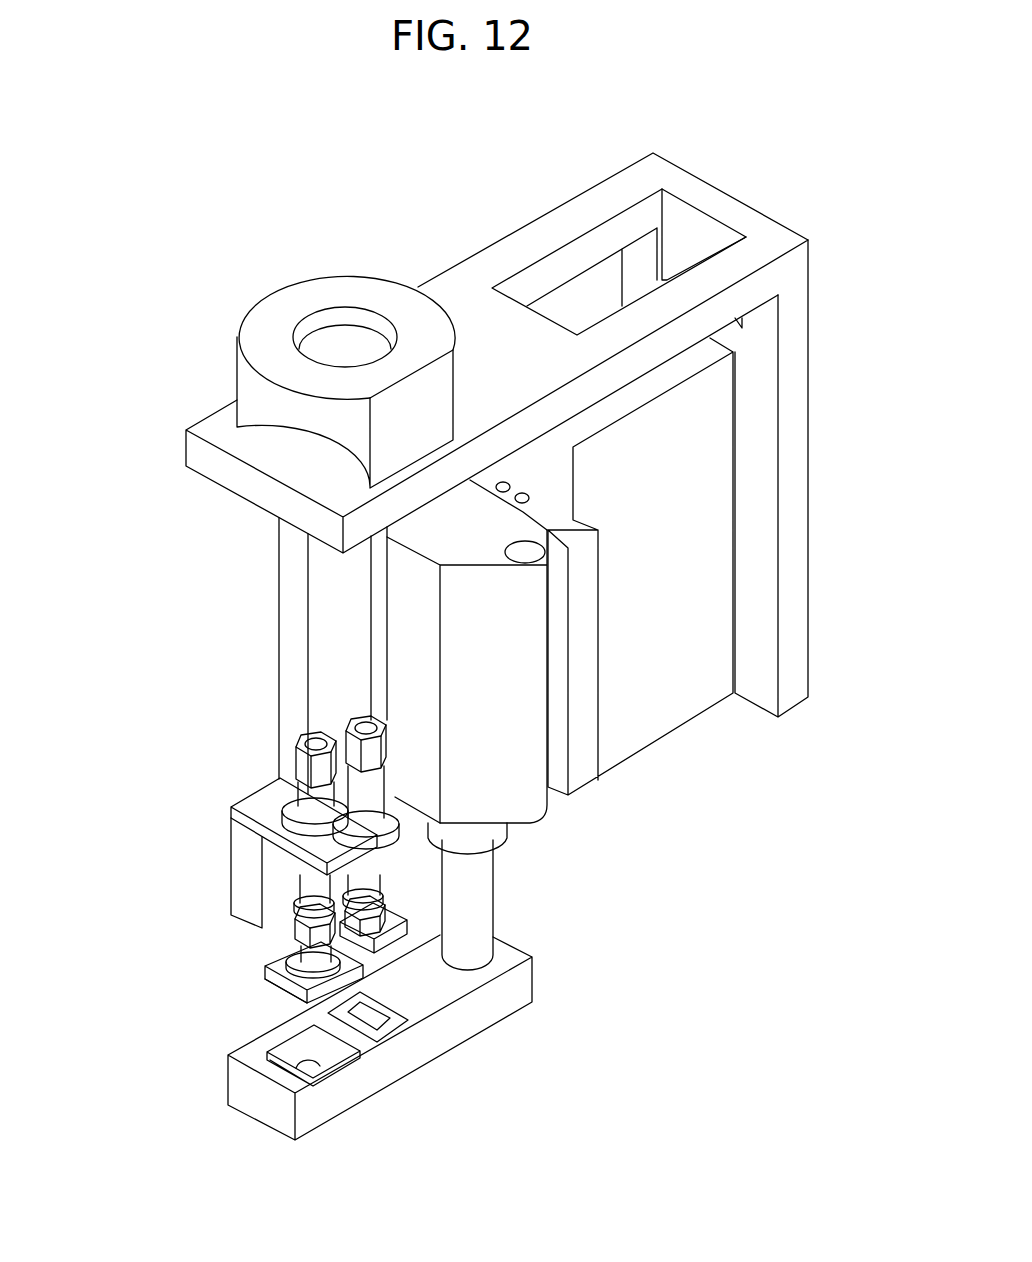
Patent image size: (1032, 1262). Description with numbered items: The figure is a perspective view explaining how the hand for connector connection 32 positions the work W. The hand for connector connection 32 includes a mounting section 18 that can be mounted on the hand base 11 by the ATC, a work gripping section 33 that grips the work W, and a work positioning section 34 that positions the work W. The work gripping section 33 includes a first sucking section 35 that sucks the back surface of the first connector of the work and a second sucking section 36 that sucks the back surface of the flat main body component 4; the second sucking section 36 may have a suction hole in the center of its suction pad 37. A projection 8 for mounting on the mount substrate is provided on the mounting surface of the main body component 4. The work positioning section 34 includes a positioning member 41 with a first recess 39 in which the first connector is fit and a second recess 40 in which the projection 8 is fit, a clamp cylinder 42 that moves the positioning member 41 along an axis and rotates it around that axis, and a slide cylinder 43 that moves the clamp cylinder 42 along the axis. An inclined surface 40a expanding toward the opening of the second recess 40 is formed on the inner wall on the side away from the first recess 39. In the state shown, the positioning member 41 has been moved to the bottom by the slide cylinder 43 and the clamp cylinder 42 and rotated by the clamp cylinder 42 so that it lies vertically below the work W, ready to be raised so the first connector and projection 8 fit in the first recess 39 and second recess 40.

The hand for connector connection 32 is at (112, 192).
The hand base 11 is at (800, 403).
The mounting section 18 is at (262, 325).
The slide cylinder 43 is at (703, 537).
The clamp cylinder 42 is at (525, 670).
The work positioning section 34 is at (570, 862).
The work gripping section 33 is at (206, 740).
The suction pad 37 is at (297, 958).
The first sucking section 35 is at (403, 962).
The main body component 4 is at (283, 982).
The second sucking section 36 is at (270, 944).
The work W is at (256, 971).
The projection 8 is at (296, 993).
The positioning member 41 is at (518, 985).
The second recess 40 is at (335, 1046).
The inclined surface 40a is at (300, 1058).
The first recess 39 is at (383, 1029).